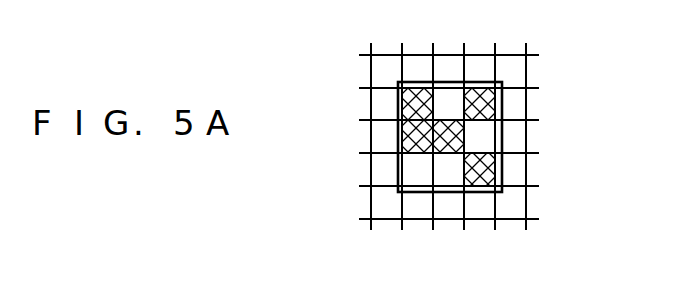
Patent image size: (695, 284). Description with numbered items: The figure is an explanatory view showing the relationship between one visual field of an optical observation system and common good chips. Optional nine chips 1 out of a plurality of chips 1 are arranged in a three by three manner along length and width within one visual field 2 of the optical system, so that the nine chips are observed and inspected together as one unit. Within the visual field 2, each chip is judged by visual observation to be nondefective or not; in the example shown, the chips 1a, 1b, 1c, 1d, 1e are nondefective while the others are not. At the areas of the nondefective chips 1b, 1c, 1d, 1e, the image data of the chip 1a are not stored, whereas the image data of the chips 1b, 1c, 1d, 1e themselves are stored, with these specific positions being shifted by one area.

The chips 1 is at (540, 44).
The visual field 2 is at (502, 98).
The nondefective chip 1a is at (402, 107).
The nondefective chip 1b is at (402, 143).
The nondefective chip 1c is at (450, 148).
The nondefective chip 1d is at (487, 168).
The nondefective chip 1e is at (493, 108).